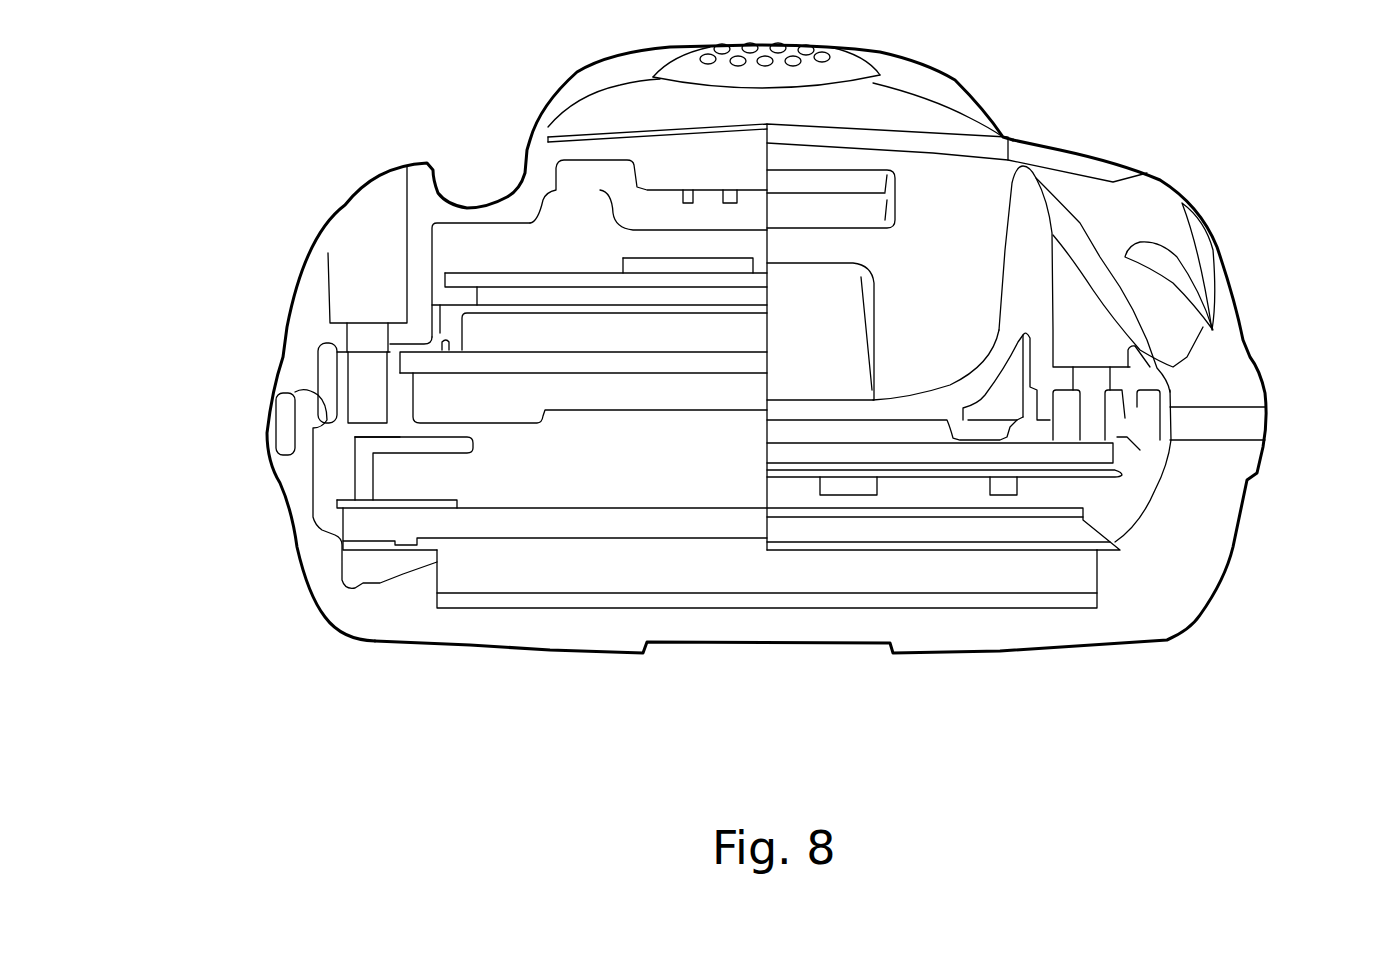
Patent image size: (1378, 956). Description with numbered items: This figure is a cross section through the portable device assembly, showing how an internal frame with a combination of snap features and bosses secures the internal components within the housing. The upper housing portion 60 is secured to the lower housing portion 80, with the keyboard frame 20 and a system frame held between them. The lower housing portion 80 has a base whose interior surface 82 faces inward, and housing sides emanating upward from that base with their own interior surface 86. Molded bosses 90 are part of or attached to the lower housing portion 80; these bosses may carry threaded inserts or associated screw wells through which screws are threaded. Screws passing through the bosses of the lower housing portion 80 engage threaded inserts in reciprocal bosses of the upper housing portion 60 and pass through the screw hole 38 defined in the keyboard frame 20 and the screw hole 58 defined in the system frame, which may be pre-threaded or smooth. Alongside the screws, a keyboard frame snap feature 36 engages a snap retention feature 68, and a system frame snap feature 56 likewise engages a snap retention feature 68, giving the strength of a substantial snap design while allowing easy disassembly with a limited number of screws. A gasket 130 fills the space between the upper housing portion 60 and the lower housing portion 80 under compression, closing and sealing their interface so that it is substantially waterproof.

The keyboard frame 20 is at (393, 402).
The keyboard frame snap feature 36 is at (1117, 437).
The screw hole 38 is at (1093, 417).
The system frame snap feature 56 is at (330, 423).
The screw hole 58 is at (327, 377).
The upper housing portion 60 is at (340, 575).
The snap retention feature 68 is at (370, 387).
The lower housing portion 80 is at (422, 183).
The interior surface 82 is at (533, 222).
The interior surface 86 is at (328, 348).
The molded boss 90 is at (380, 242).
The gasket 130 is at (276, 422).